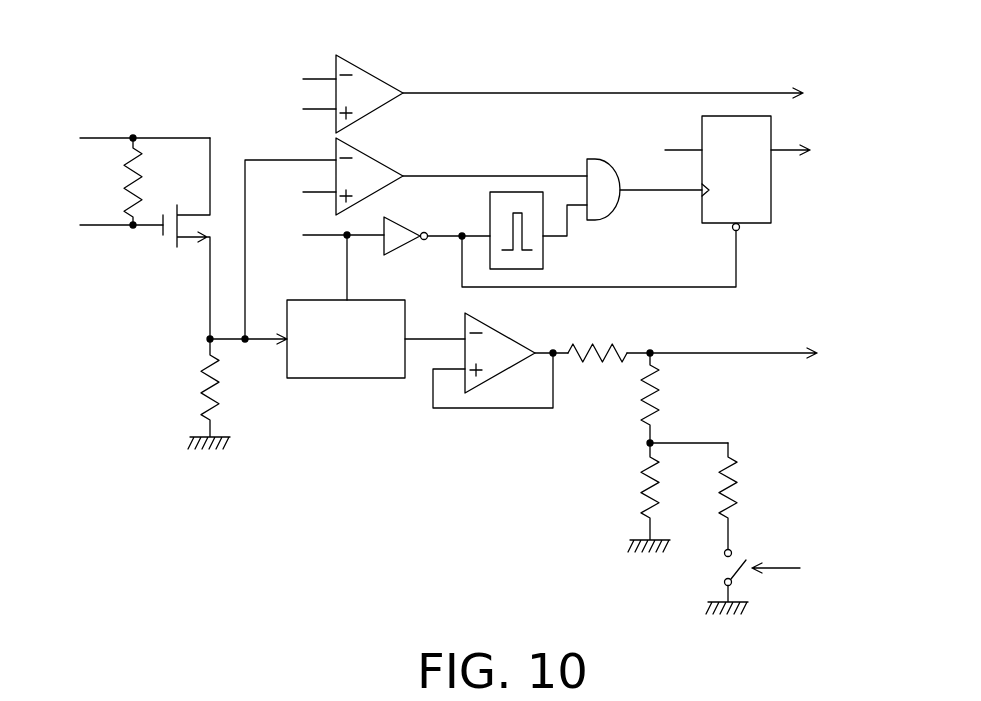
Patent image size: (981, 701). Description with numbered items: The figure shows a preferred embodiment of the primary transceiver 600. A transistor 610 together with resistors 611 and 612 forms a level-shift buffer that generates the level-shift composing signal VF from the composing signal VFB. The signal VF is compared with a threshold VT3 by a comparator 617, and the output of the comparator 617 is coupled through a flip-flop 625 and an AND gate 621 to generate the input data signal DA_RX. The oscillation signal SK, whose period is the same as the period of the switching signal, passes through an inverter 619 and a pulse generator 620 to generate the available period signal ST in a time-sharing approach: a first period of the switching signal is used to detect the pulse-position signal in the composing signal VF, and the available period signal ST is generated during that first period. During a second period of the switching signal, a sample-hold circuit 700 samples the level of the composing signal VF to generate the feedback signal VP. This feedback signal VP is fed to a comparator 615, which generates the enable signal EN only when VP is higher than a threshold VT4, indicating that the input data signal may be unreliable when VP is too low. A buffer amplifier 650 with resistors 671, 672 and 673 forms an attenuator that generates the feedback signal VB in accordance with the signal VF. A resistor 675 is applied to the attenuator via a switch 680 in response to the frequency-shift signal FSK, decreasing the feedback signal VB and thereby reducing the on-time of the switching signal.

The primary transceiver 600 is at (908, 623).
The transistor 610 is at (180, 238).
The resistor 611 is at (108, 181).
The resistor 612 is at (186, 394).
The comparator 615 is at (372, 69).
The comparator 617 is at (381, 155).
The inverter 619 is at (402, 248).
The pulse generator 620 is at (490, 208).
The AND gate 621 is at (604, 220).
The flip-flop 625 is at (771, 203).
The buffer amplifier 650 is at (522, 322).
The resistor 671 is at (597, 334).
The resistor 672 is at (624, 398).
The resistor 673 is at (629, 497).
The resistor 675 is at (756, 496).
The switch 680 is at (711, 582).
The sample-hold circuit 700 is at (342, 378).